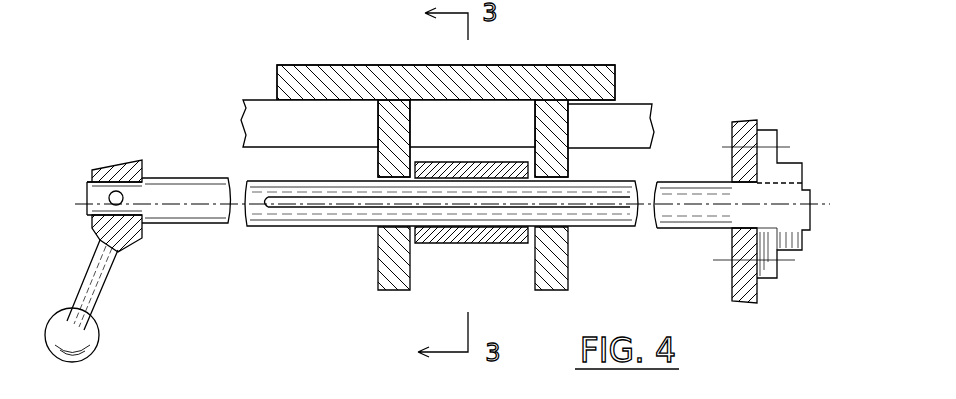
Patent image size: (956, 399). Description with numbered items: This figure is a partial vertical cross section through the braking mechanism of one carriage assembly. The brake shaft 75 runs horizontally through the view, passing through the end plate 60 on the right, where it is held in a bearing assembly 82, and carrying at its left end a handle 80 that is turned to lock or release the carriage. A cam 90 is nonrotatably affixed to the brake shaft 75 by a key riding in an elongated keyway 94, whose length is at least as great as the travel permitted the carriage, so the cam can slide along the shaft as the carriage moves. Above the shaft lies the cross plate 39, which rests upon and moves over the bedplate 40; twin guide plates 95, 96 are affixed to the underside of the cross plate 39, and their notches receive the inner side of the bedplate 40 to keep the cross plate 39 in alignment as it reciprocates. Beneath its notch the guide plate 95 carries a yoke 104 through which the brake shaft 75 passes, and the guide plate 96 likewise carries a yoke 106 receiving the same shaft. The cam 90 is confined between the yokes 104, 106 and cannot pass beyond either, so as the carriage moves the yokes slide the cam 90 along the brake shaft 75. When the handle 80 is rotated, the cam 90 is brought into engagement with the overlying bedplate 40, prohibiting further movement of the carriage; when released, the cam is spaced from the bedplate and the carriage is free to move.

The cross plate 39 is at (555, 82).
The bedplate 40 is at (632, 106).
The end plate 60 is at (738, 285).
The brake shaft 75 is at (703, 197).
The handle 80 is at (108, 168).
The bearing assembly 82 is at (788, 172).
The cam 90 is at (460, 238).
The elongated keyway 94 is at (280, 200).
The guide plate 95 is at (389, 122).
The guide plate 96 is at (550, 125).
The yoke 104 is at (392, 268).
The yoke 106 is at (560, 262).